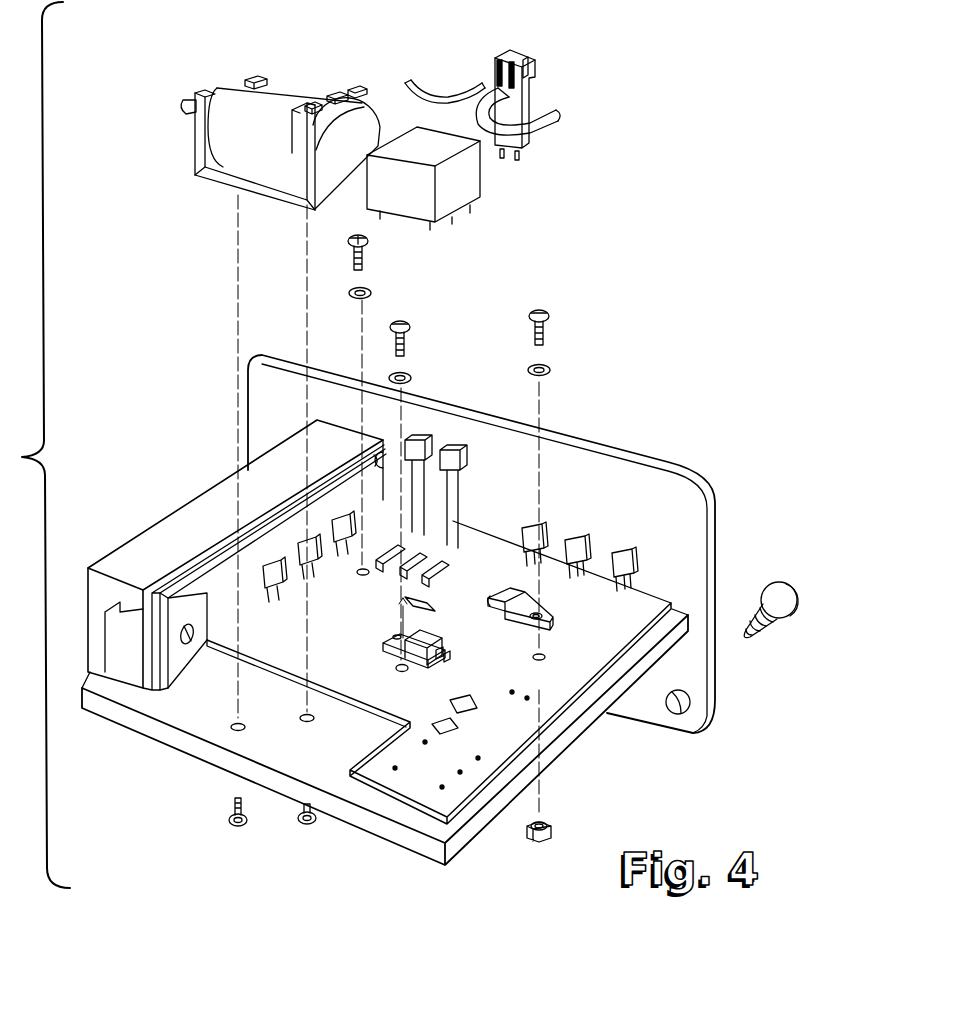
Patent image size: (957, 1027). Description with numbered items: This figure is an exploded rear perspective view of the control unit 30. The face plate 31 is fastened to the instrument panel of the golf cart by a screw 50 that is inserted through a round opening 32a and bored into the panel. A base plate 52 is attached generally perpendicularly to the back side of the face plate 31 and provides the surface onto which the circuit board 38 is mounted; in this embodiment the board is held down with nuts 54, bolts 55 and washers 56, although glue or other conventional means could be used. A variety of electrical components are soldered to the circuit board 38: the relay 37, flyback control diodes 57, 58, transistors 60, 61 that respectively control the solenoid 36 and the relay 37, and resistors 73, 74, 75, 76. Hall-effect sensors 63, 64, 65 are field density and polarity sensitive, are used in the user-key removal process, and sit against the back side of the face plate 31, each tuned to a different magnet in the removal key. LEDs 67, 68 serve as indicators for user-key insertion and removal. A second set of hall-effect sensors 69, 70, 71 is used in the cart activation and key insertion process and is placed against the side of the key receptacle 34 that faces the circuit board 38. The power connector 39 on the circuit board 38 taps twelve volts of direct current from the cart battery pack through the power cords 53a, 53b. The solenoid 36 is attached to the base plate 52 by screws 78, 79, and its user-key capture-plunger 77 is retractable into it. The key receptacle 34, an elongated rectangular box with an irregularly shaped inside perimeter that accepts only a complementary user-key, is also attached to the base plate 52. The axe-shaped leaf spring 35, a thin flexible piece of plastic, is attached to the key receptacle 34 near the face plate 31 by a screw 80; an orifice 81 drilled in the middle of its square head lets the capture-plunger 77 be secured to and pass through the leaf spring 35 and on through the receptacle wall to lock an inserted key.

The control unit 30 is at (688, 217).
The face plate 31 is at (626, 450).
The round opening 32a is at (680, 714).
The key receptacle 34 is at (155, 538).
The leaf spring 35 is at (190, 594).
The solenoid 36 is at (287, 143).
The relay 37 is at (423, 178).
The circuit board 38 is at (405, 760).
The power connector 39 is at (530, 68).
The screw 50 is at (777, 582).
The base plate 52 is at (385, 717).
The power cord 53a is at (566, 118).
The power cord 53b is at (412, 82).
The nut 54 is at (552, 832).
The bolt 55 is at (371, 253).
The washer 56 is at (374, 296).
The diode 57 is at (460, 720).
The diode 58 is at (462, 700).
The transistor 60 is at (420, 655).
The transistor 61 is at (545, 612).
The hall-effect sensor 63 is at (636, 565).
The hall-effect sensor 64 is at (586, 553).
The hall-effect sensor 65 is at (545, 545).
The LED 67 is at (462, 470).
The LED 68 is at (432, 440).
The hall-effect sensor 69 is at (340, 516).
The hall-effect sensor 70 is at (302, 540).
The hall-effect sensor 71 is at (268, 565).
The resistor 73 is at (386, 566).
The resistor 74 is at (408, 572).
The resistor 75 is at (447, 572).
The resistor 76 is at (420, 614).
The user-key capture-plunger 77 is at (190, 104).
The screw 78 is at (232, 822).
The screw 79 is at (305, 826).
The screw 80 is at (380, 450).
The orifice 81 is at (190, 648).